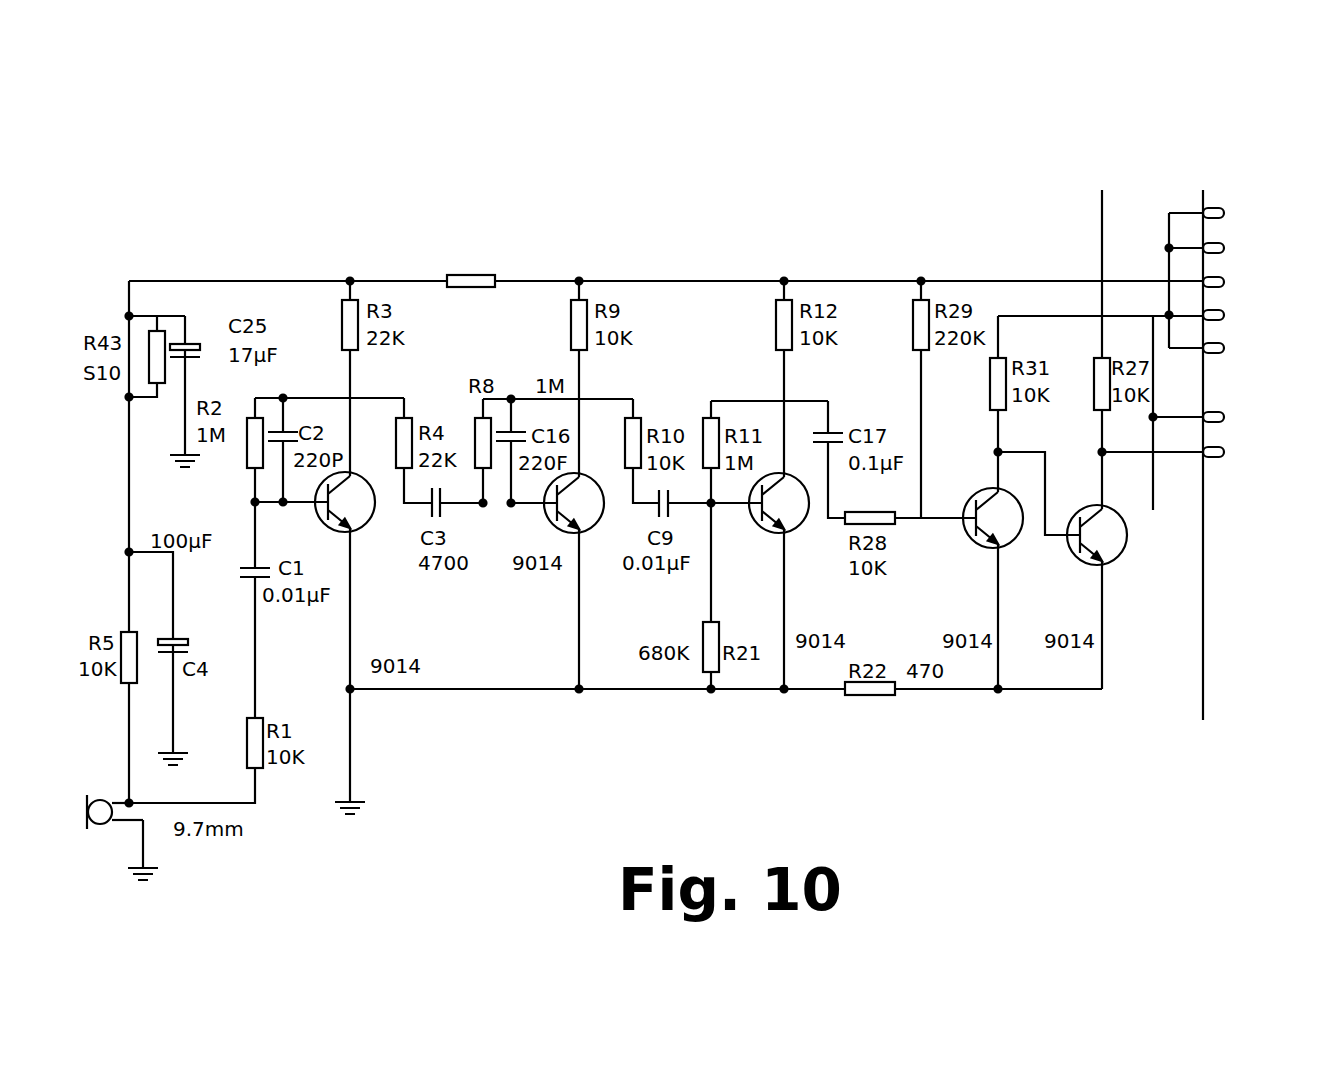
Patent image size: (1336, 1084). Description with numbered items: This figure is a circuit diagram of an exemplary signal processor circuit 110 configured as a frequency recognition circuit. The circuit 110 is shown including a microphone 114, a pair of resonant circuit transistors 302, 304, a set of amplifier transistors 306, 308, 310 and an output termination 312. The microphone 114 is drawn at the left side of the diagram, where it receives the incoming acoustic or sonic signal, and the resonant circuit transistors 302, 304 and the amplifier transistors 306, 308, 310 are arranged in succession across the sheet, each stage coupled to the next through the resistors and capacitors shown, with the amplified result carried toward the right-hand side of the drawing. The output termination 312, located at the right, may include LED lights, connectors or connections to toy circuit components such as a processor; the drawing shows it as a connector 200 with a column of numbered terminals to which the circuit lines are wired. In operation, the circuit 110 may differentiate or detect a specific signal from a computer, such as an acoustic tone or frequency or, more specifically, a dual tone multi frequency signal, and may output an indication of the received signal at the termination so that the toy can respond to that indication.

The signal processor circuit 110 is at (957, 182).
The microphone 114 is at (98, 798).
The controller connector 200 is at (1175, 153).
The resonant circuit transistor 302 is at (357, 527).
The resonant circuit transistor 304 is at (585, 530).
The amplifier transistor 306 is at (790, 530).
The amplifier transistor 308 is at (1005, 548).
The amplifier transistor 310 is at (1107, 565).
The output termination 312 is at (1263, 378).